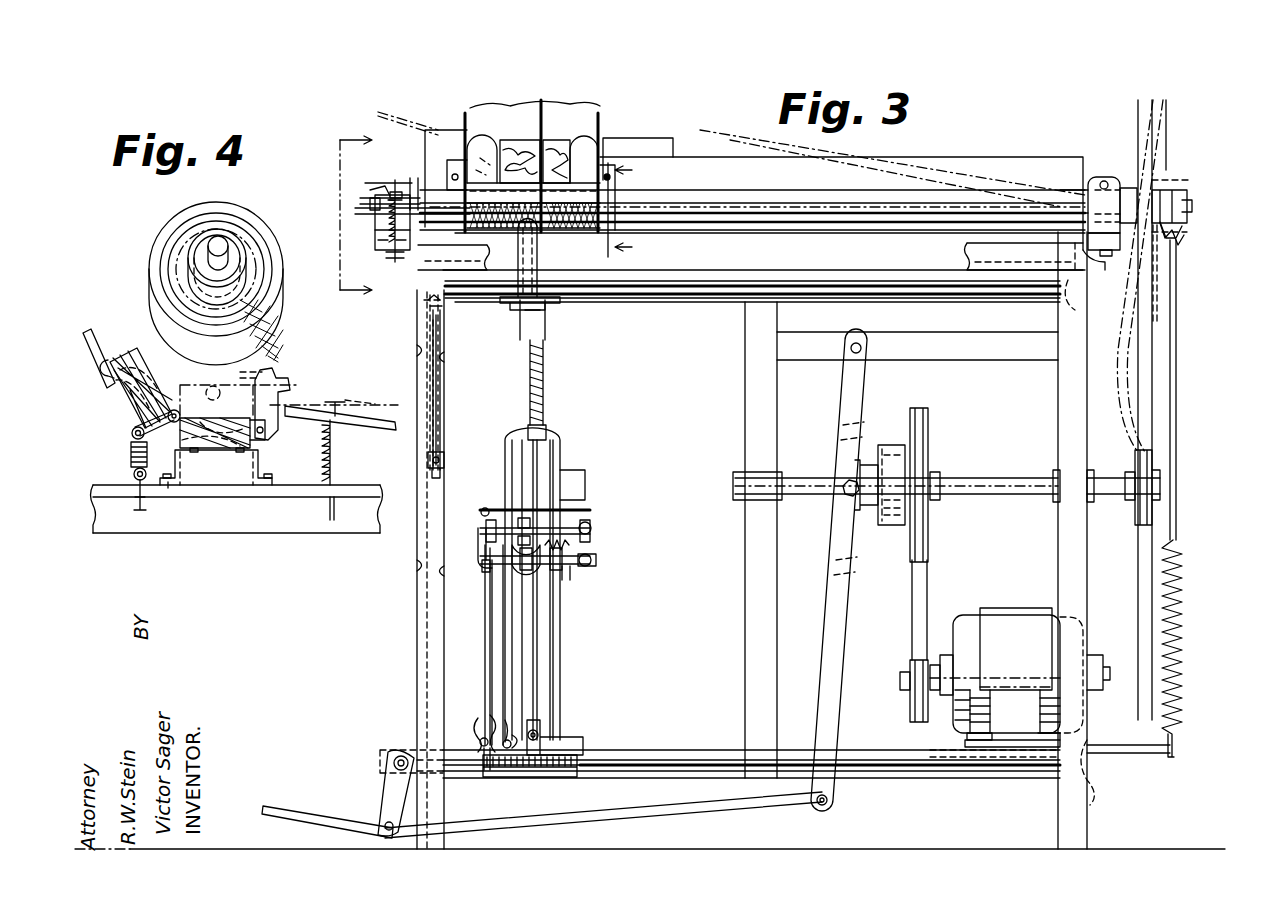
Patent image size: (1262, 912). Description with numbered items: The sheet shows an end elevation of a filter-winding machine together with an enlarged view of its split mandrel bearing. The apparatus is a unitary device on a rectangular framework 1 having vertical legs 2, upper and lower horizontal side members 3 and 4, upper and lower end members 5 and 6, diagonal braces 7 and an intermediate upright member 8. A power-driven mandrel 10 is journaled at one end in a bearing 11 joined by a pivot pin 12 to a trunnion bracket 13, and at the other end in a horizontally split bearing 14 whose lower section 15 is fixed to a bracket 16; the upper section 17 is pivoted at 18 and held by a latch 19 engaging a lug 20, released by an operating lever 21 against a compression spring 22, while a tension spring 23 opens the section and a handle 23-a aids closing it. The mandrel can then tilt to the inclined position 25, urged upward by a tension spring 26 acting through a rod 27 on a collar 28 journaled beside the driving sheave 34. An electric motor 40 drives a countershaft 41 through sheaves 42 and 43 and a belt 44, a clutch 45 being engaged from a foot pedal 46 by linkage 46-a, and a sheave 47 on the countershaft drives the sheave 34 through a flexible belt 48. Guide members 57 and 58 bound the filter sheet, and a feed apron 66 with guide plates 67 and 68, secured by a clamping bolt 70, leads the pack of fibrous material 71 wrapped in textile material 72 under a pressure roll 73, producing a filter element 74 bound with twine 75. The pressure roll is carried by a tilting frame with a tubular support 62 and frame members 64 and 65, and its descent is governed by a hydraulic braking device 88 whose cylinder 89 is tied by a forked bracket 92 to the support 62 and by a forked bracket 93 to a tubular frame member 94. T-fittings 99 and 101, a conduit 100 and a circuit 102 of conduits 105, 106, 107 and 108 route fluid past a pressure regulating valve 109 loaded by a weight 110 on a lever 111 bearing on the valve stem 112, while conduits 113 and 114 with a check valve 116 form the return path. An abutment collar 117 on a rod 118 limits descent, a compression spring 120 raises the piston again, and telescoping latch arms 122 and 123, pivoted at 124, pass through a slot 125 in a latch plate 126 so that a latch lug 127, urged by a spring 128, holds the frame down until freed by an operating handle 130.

In FIG. 3, the rectangular framework 1 is at (400, 634).
In FIG. 3, the vertical legs 2 is at (432, 650).
In FIG. 3, the upper horizontal side member 3 is at (1000, 258).
In FIG. 3, the lower horizontal side member 4 is at (998, 798).
In FIG. 4, the upper end member 5 is at (265, 520).
In FIG. 3, the upper end member 5 is at (418, 264).
In FIG. 3, the lower end member 6 is at (415, 752).
In FIG. 3, the diagonal brace 7 is at (432, 536).
In FIG. 3, the intermediate upright member 8 is at (716, 585).
In FIG. 4, the mandrel 10 is at (225, 240).
In FIG. 3, the mandrel 10 is at (793, 207).
In FIG. 3, the bearing 11 is at (1130, 185).
In FIG. 3, the pivot pin 12 is at (1105, 178).
In FIG. 3, the trunnion bracket 13 is at (1110, 235).
In FIG. 4, the horizontally split bearing 14 is at (268, 440).
In FIG. 3, the horizontally split bearing 14 is at (352, 206).
In FIG. 4, the lower section 15 is at (215, 448).
In FIG. 3, the lower section 15 is at (378, 212).
In FIG. 4, the bracket 16 is at (182, 490).
In FIG. 4, the upper section 17 is at (130, 398).
In FIG. 3, the upper section 17 is at (368, 190).
In FIG. 4, the pivot 18 is at (181, 414).
In FIG. 4, the latch 19 is at (290, 388).
In FIG. 3, the latch 19 is at (410, 182).
In FIG. 4, the lug 20 is at (113, 358).
In FIG. 4, the operating lever 21 is at (380, 412).
In FIG. 3, the operating lever 21 is at (405, 192).
In FIG. 4, the compression spring 22 is at (338, 462).
In FIG. 3, the compression spring 22 is at (386, 228).
In FIG. 4, the tension spring 23 is at (130, 453).
In FIG. 3, the tension spring 23 is at (392, 188).
In FIG. 4, the handle 23-a is at (96, 326).
In FIG. 3, the upwardly inclined position 25 is at (690, 131).
In FIG. 3, the tension spring 26 is at (1176, 590).
In FIG. 3, the rod 27 is at (1178, 412).
In FIG. 3, the collar 28 is at (1175, 190).
In FIG. 3, the driving sheave 34 is at (1160, 302).
In FIG. 3, the electric motor 40 is at (1010, 615).
In FIG. 3, the countershaft 41 is at (975, 487).
In FIG. 3, the sheave 42 is at (905, 706).
In FIG. 3, the sheave 43 is at (930, 548).
In FIG. 3, the belt 44 is at (920, 580).
In FIG. 3, the clutch 45 is at (900, 460).
In FIG. 3, the foot pedal 46 is at (318, 813).
In FIG. 3, the linkage 46-a is at (835, 660).
In FIG. 3, the sheave 47 is at (1140, 518).
In FIG. 3, the belt 48 is at (1152, 365).
In FIG. 3, the guide member 57 is at (420, 135).
In FIG. 3, the guide member 58 is at (610, 148).
In FIG. 3, the support 62 is at (690, 275).
In FIG. 3, the frame member 64 is at (418, 302).
In FIG. 3, the frame member 65 is at (1078, 310).
In FIG. 3, the feed apron 66 is at (920, 155).
In FIG. 3, the guide plate 67 is at (448, 135).
In FIG. 3, the guide plate 68 is at (600, 128).
In FIG. 3, the clamping bolt 70 is at (616, 185).
In FIG. 3, the fibrous material 71 is at (525, 148).
In FIG. 3, the textile material 72 is at (486, 155).
In FIG. 3, the pressure roll 73 is at (735, 265).
In FIG. 4, the filter element 74 is at (156, 228).
In FIG. 3, the binding material 75 is at (543, 150).
In FIG. 3, the hydraulic braking device 88 is at (583, 671).
In FIG. 3, the cylinder 89 is at (550, 695).
In FIG. 3, the forked bracket 92 is at (600, 288).
In FIG. 3, the forked bracket 93 is at (568, 772).
In FIG. 3, the tubular frame member 94 is at (655, 765).
In FIG. 3, the T-fitting 99 is at (582, 515).
In FIG. 3, the conduit 100 is at (505, 735).
In FIG. 3, the T-fitting 101 is at (493, 770).
In FIG. 3, the circuit 102 is at (473, 673).
In FIG. 3, the conduit 105 is at (485, 605).
In FIG. 3, the conduit 106 is at (568, 568).
In FIG. 3, the conduit 107 is at (592, 545).
In FIG. 3, the conduit 108 is at (590, 524).
In FIG. 3, the pressure regulating valve 109 is at (525, 568).
In FIG. 3, the weight 110 is at (562, 482).
In FIG. 3, the lever 111 is at (576, 505).
In FIG. 3, the valve stem 112 is at (516, 522).
In FIG. 3, the conduit 113 is at (482, 514).
In FIG. 3, the conduit 114 is at (480, 548).
In FIG. 3, the check valve 116 is at (478, 720).
In FIG. 3, the abutment collar 117 is at (444, 458).
In FIG. 3, the rod 118 is at (442, 402).
In FIG. 3, the compression spring 120 is at (545, 375).
In FIG. 3, the upper arm 122 is at (546, 420).
In FIG. 3, the lower arm 123 is at (532, 645).
In FIG. 3, the pivot 124 is at (545, 735).
In FIG. 3, the slot 125 is at (510, 308).
In FIG. 3, the latch plate 126 is at (552, 302).
In FIG. 3, the latch lug 127 is at (547, 318).
In FIG. 3, the spring 128 is at (592, 563).
In FIG. 3, the operating handle 130 is at (537, 252).